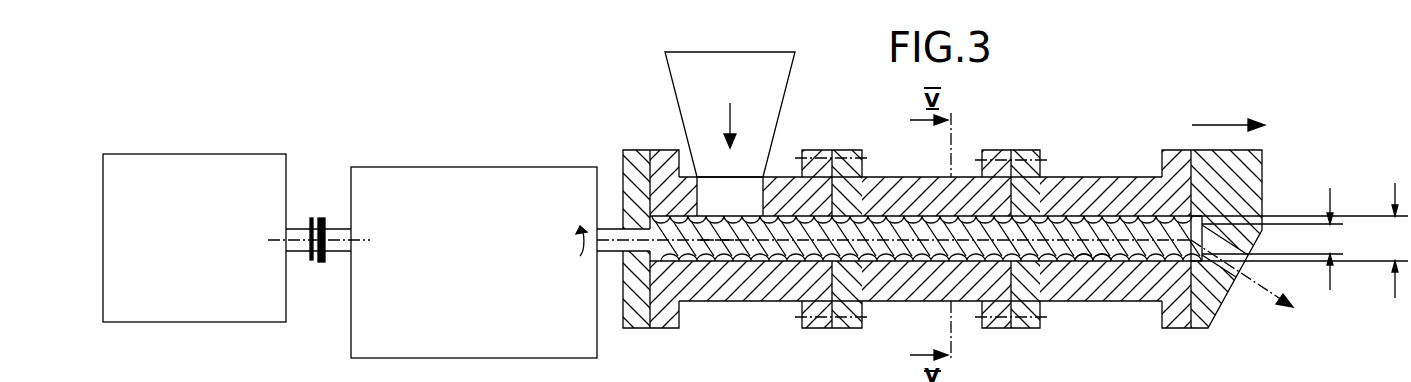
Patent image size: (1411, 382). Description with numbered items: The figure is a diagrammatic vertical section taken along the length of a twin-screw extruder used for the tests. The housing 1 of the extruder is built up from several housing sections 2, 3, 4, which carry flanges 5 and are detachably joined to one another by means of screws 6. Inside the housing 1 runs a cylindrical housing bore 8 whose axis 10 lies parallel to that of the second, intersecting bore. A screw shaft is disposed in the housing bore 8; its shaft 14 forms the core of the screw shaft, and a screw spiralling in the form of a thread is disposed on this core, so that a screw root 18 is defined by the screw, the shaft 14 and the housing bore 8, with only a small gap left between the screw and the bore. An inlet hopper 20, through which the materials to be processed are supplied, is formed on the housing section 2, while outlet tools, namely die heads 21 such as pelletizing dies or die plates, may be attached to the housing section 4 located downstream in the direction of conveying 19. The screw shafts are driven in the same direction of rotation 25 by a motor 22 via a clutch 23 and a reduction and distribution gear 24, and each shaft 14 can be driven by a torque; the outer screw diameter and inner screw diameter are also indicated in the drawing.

The housing 1 is at (1138, 164).
The housing section 2 is at (782, 177).
The housing section 3 is at (883, 177).
The housing section 4 is at (1101, 177).
The flange 5 is at (1018, 150).
The screw 6 is at (847, 150).
The housing bore 8 is at (767, 262).
The axis 10 is at (720, 240).
The shaft 14 is at (610, 231).
The screw root 18 is at (1095, 262).
The direction of conveying 19 is at (1228, 115).
The inlet hopper 20 is at (667, 72).
The die head 21 is at (1211, 309).
The motor 22 is at (212, 261).
The clutch 23 is at (317, 218).
The reduction and distribution gear 24 is at (430, 261).
The direction of rotation 25 is at (575, 239).